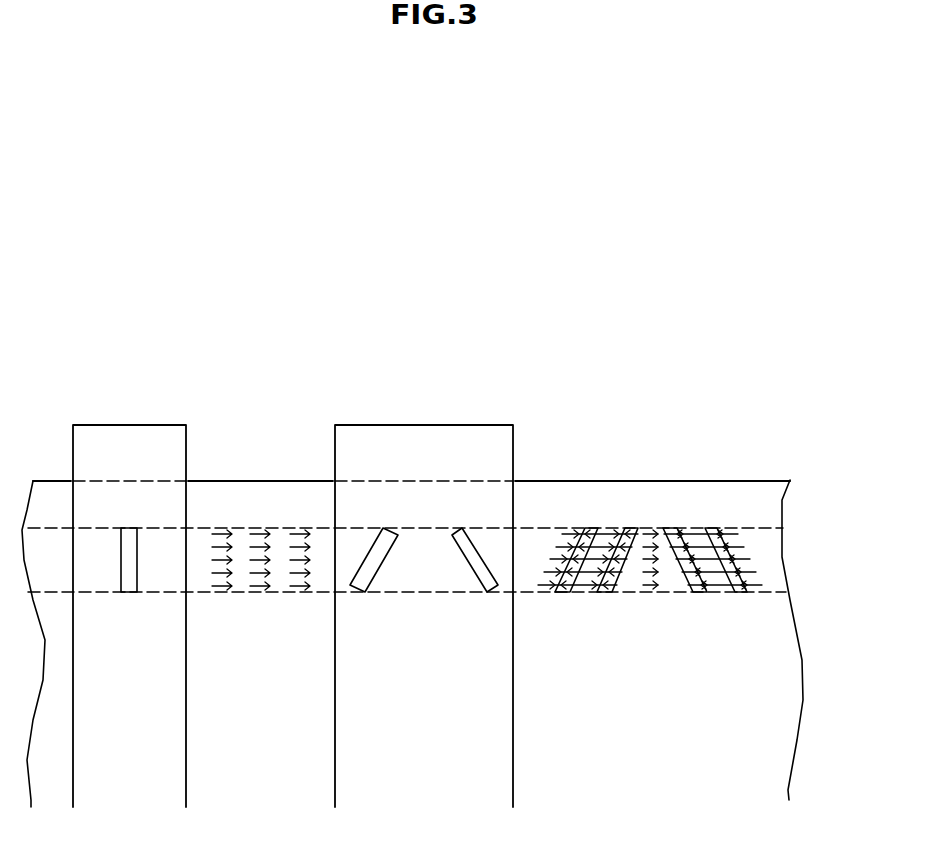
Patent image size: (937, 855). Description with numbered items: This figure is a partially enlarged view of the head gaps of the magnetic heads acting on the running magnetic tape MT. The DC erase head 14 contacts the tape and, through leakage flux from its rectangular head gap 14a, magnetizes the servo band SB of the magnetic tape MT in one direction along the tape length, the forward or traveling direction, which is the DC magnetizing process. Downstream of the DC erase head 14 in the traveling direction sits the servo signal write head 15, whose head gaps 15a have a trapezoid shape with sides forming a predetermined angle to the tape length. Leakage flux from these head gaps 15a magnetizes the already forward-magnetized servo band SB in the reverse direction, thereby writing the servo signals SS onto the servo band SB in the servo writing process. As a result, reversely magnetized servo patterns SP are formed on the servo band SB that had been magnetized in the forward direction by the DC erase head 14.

The DC erase head 14 is at (97, 424).
The head gap 14a is at (130, 590).
The servo signal write head 15 is at (360, 424).
The head gap 15a is at (375, 565).
The magnetic tape MT is at (680, 480).
The servo pattern SP is at (572, 525).
The servo band SB is at (635, 593).
The servo signal SS is at (793, 559).